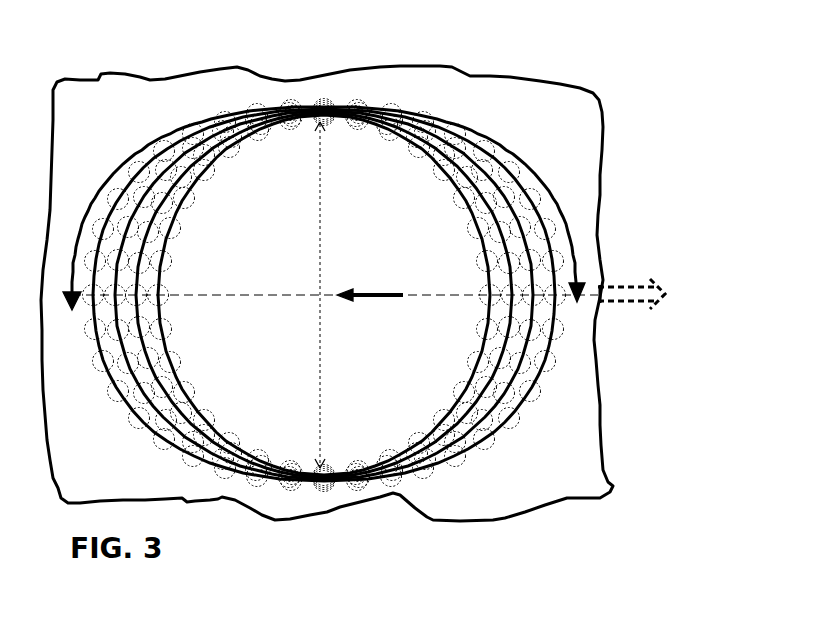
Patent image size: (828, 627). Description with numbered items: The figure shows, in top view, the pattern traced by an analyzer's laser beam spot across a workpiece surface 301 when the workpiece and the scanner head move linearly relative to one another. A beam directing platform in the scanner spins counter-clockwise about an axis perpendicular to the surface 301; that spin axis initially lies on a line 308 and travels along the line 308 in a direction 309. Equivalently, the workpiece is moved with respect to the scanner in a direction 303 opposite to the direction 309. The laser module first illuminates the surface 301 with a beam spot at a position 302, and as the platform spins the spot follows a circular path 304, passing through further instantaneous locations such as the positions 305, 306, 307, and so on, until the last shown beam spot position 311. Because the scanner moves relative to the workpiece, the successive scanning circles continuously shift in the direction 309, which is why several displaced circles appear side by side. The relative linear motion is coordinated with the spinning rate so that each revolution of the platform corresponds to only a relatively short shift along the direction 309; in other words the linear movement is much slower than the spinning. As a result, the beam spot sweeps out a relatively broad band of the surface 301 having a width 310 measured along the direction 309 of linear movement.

The surface 301 is at (557, 436).
The beam spot position 302 is at (580, 304).
The direction 303 is at (621, 287).
The circular path 304 is at (560, 210).
The position 305 is at (540, 170).
The position 306 is at (513, 148).
The position 307 is at (482, 126).
The line 308 is at (430, 292).
The direction 309 is at (373, 292).
The width 310 is at (320, 224).
The beam spot position 311 is at (62, 292).